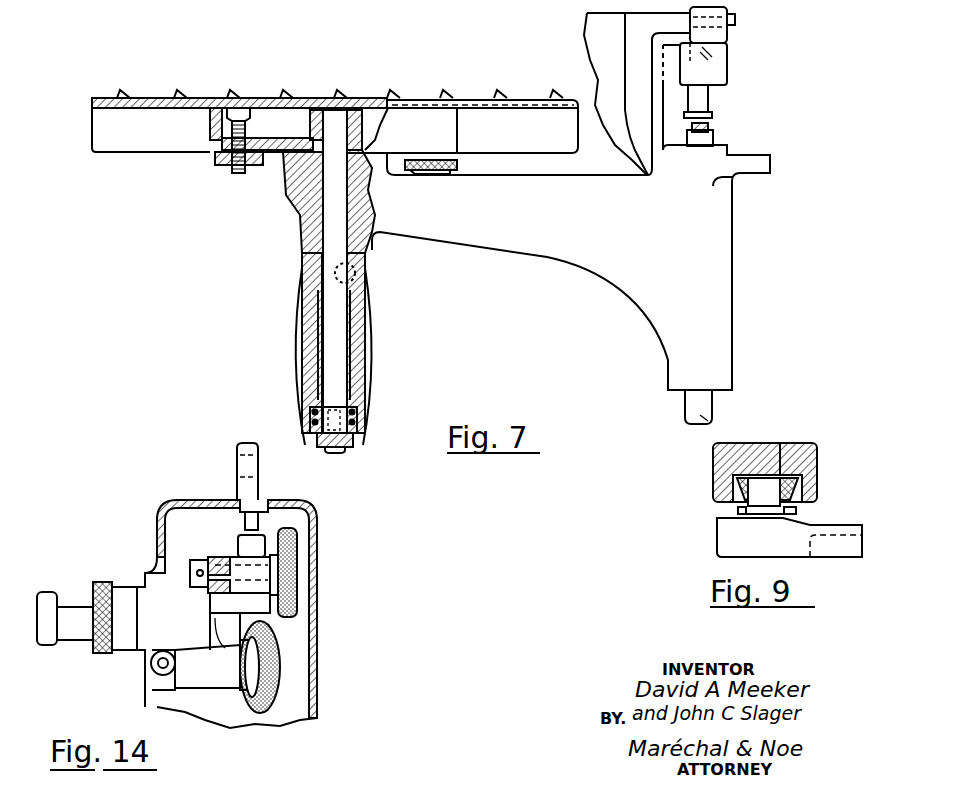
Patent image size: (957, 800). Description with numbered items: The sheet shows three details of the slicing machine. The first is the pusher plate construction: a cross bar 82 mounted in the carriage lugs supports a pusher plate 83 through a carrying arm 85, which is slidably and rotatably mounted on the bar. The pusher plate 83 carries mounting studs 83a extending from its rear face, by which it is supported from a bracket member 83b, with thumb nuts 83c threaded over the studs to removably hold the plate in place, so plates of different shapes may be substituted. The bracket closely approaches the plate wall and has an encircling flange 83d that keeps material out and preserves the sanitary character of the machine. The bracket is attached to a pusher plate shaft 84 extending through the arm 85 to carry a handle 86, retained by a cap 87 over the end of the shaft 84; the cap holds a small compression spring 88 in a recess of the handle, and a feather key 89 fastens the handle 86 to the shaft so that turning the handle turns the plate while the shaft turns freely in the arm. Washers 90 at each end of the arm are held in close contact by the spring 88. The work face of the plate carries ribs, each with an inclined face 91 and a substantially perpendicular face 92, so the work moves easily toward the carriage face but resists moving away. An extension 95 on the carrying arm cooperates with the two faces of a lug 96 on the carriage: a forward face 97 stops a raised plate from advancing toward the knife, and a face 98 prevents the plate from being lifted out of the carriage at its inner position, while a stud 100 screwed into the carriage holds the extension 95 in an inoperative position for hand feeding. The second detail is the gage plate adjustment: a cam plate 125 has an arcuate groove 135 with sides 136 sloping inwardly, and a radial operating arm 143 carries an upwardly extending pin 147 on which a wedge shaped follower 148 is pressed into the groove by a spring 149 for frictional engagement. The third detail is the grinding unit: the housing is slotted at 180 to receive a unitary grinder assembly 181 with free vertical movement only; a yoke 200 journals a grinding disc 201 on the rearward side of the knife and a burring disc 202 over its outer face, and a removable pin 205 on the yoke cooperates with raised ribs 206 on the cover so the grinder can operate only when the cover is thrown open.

In FIG. 7, the cross bar 82 is at (690, 412).
In FIG. 7, the pusher plate 83 is at (195, 97).
In FIG. 7, the mounting studs 83a is at (225, 150).
In FIG. 7, the bracket member 83b is at (212, 124).
In FIG. 7, the thumb nuts 83c is at (224, 170).
In FIG. 7, the encircling flange 83d is at (432, 133).
In FIG. 7, the pusher plate shaft 84 is at (330, 333).
In FIG. 7, the carrying arm 85 is at (557, 252).
In FIG. 7, the handle 86 is at (298, 360).
In FIG. 7, the cap 87 is at (350, 440).
In FIG. 7, the compression spring 88 is at (365, 420).
In FIG. 7, the feather key 89 is at (352, 272).
In FIG. 7, the washers 90 is at (282, 160).
In FIG. 7, the inclined face 91 is at (375, 133).
In FIG. 7, the perpendicular face 92 is at (388, 97).
In FIG. 7, the extension 95 is at (770, 170).
In FIG. 7, the lug 96 is at (710, 68).
In FIG. 7, the forward face 97 is at (708, 100).
In FIG. 7, the face of the lug 98 is at (728, 58).
In FIG. 7, the stud 100 is at (712, 117).
In FIG. 9, the cam plate 125 is at (815, 458).
In FIG. 9, the arcuate groove 135 is at (785, 450).
In FIG. 9, the groove sides 136 is at (803, 483).
In FIG. 9, the operating arm 143 is at (842, 558).
In FIG. 9, the pin 147 is at (760, 505).
In FIG. 9, the wedge shaped follower 148 is at (735, 507).
In FIG. 9, the spring 149 is at (790, 515).
In FIG. 14, the slot 180 is at (162, 648).
In FIG. 14, the unitary grinder assembly 181 is at (222, 685).
In FIG. 14, the yoke 200 is at (213, 672).
In FIG. 14, the grinding disc 201 is at (280, 682).
In FIG. 14, the burring disc 202 is at (297, 558).
In FIG. 14, the pin 205 is at (247, 527).
In FIG. 14, the raised ribs 206 is at (267, 508).